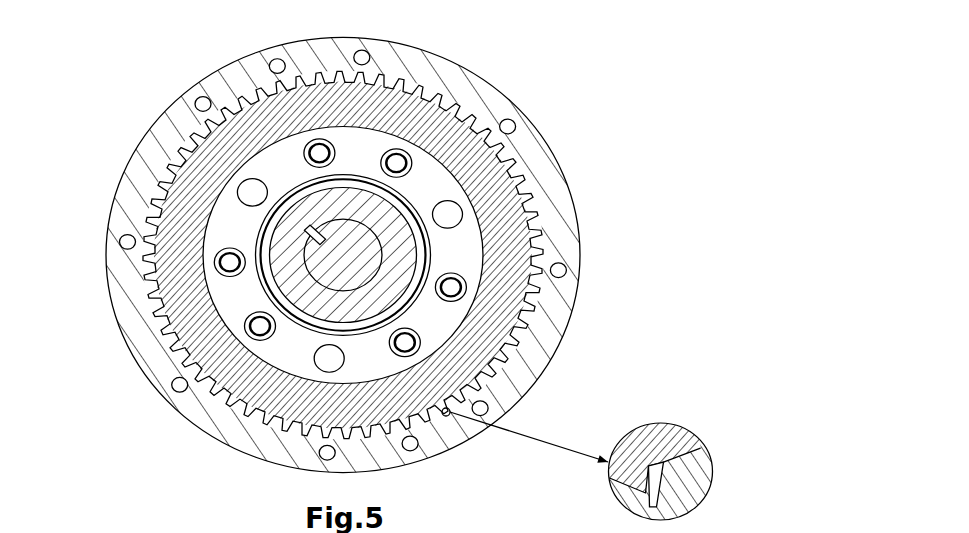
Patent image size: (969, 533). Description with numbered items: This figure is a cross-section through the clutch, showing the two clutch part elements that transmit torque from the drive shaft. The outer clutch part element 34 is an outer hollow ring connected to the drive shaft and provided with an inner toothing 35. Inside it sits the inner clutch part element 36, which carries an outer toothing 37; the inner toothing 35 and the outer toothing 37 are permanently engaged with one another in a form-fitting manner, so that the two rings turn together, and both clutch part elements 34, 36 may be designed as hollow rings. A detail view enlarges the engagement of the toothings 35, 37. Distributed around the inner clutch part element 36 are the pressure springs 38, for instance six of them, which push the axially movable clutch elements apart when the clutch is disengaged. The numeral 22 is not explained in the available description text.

The hub 22 is at (331, 256).
The clutch part element 34 is at (440, 78).
The inner toothing 35 is at (458, 105).
The inner clutch part element 36 is at (520, 193).
The outer toothing 37 is at (522, 297).
The pressure springs 38 is at (452, 300).